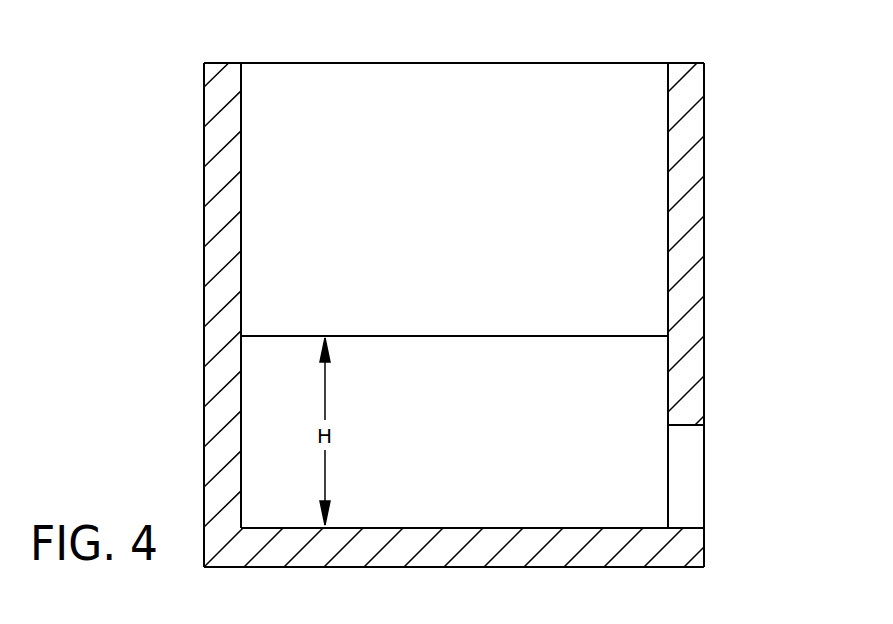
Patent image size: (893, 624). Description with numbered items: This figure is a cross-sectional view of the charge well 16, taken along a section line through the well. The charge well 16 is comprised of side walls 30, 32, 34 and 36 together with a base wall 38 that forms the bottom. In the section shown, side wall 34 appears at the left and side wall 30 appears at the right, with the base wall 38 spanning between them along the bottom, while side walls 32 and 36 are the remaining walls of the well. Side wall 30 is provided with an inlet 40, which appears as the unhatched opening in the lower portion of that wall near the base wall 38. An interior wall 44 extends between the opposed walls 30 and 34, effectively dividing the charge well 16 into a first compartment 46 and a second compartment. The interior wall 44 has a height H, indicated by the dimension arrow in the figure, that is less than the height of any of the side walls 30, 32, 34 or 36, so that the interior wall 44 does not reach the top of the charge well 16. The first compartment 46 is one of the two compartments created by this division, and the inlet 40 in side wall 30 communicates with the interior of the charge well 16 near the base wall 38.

The charge well 16 is at (463, 200).
The side wall 30 is at (690, 212).
The side wall 32 is at (598, 0).
The side wall 34 is at (219, 215).
The side wall 36 is at (441, 63).
The base wall 38 is at (528, 567).
The inlet 40 is at (690, 478).
The interior wall 44 is at (503, 438).
The first compartment 46 is at (283, 0).